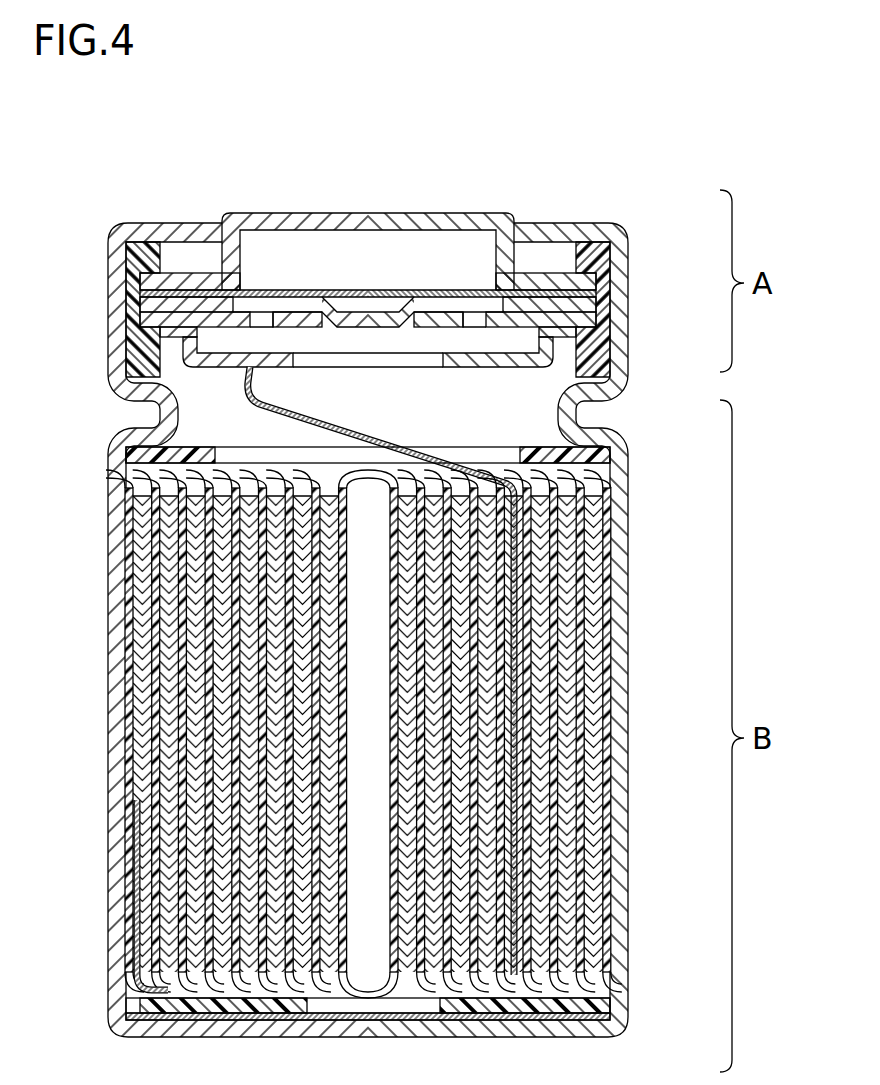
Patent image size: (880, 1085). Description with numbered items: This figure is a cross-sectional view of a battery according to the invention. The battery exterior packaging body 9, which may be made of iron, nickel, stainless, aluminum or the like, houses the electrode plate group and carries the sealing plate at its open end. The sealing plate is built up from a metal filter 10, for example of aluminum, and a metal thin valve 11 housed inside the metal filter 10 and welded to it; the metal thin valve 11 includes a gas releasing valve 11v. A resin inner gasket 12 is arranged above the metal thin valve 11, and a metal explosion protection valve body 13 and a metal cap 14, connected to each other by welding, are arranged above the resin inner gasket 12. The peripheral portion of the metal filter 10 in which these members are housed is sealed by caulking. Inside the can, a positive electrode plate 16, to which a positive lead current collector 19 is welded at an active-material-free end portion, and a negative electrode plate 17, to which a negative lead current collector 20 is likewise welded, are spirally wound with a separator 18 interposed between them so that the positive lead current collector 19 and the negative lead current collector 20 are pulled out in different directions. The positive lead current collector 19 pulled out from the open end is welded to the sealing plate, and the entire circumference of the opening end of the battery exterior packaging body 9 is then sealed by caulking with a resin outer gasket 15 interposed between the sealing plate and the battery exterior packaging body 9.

The battery exterior packaging body 9 is at (118, 556).
The metal filter 10 is at (548, 350).
The metal thin valve 11 is at (428, 232).
The gas releasing valve 11v is at (453, 317).
The resin inner gasket 12 is at (178, 297).
The metal explosion protection valve body 13 is at (605, 292).
The metal cap 14 is at (462, 213).
The resin outer gasket 15 is at (150, 377).
The positive electrode plate 16 is at (570, 813).
The negative electrode plate 17 is at (597, 698).
The separator 18 is at (607, 572).
The positive lead current collector 19 is at (380, 440).
The negative lead current collector 20 is at (422, 1020).